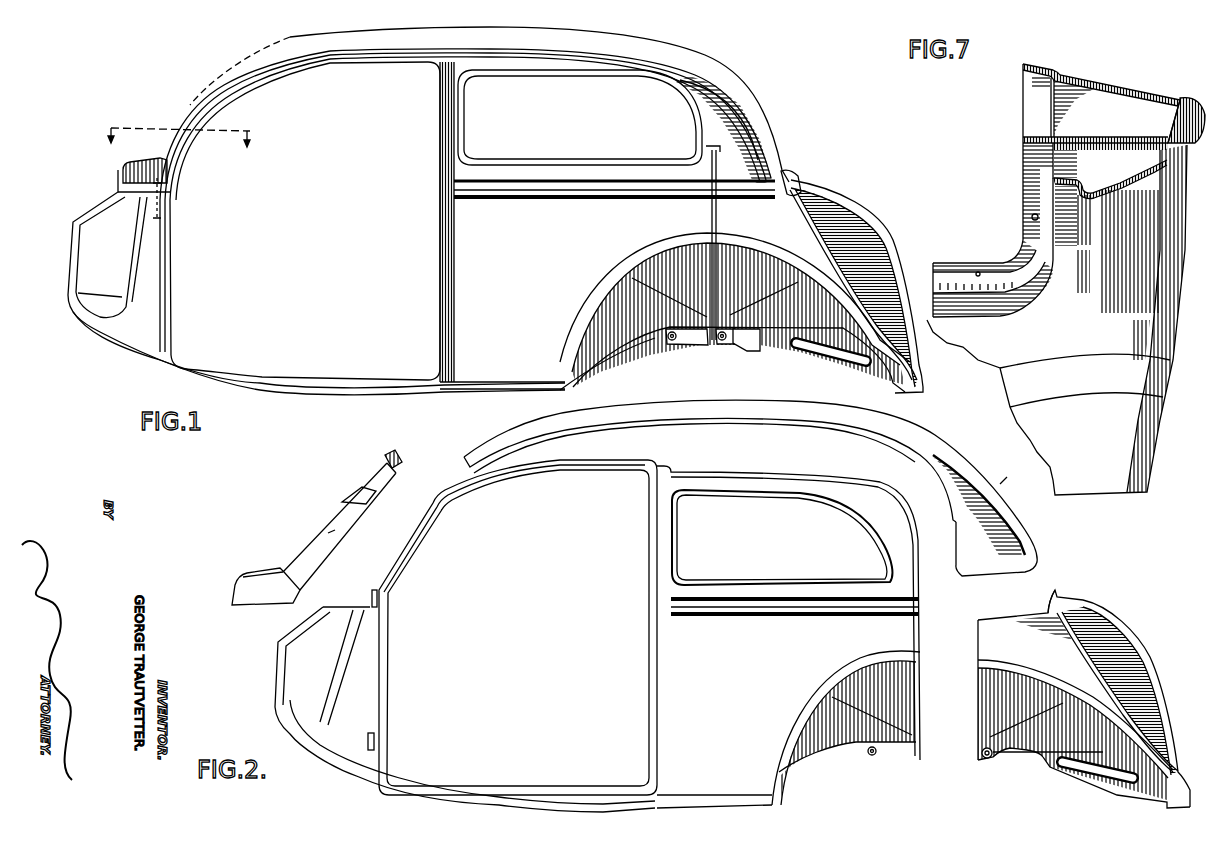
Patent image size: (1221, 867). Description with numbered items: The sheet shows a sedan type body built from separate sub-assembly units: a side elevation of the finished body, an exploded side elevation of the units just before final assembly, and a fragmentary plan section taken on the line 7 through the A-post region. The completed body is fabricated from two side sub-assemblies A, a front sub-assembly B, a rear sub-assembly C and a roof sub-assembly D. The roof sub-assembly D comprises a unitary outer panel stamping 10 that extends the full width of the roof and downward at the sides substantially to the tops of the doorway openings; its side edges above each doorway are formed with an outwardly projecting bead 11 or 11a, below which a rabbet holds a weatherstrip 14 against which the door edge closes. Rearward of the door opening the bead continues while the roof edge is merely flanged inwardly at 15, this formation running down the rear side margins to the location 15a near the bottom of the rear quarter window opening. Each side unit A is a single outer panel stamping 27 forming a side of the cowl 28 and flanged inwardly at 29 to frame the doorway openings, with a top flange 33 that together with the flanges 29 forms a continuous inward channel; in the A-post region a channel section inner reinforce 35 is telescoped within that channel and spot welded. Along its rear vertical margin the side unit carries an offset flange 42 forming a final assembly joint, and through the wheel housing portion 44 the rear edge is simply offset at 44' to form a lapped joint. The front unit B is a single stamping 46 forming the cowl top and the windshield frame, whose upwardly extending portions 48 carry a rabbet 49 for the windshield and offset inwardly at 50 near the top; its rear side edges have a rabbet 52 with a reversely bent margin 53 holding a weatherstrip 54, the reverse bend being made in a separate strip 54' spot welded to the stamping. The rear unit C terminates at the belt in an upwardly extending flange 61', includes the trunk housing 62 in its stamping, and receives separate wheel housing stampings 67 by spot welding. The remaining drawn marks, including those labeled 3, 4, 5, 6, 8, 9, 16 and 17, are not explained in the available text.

In FIG. 1, the roof side rail 3 is at (287, 38).
In FIG. 1, the roof panel 4 is at (353, 67).
In FIG. 1, the rear quarter window frame 5 is at (597, 67).
In FIG. 1, the rear pillar seam 6 is at (778, 173).
In FIG. 1, the section line 7— 7 is at (173, 145).
In FIG. 1, the cowl side panel 8 is at (112, 273).
In FIG. 1, the sill 9 is at (343, 342).
In FIG. 1, the unitary outer panel stamping 10 is at (600, 40).
In FIG. 2, the unitary outer panel stamping 10 is at (795, 406).
In FIG. 1, the outwardly projecting bead 11 is at (538, 58).
In FIG. 1, the outwardly projecting bead 11a is at (748, 286).
In FIG. 1, the weatherstrip 14 is at (352, 47).
In FIG. 1, the inward flange 15 is at (167, 183).
In FIG. 1, the location 15a is at (712, 148).
In FIG. 2, the location 15a is at (952, 525).
In FIG. 1, the wheel housing 16 is at (667, 273).
In FIG. 1, the wheel housing panel 17 is at (747, 260).
In FIG. 1, the outer panel stamping 27 is at (522, 256).
In FIG. 2, the outer panel stamping 27 is at (673, 645).
In FIG. 1, the cowl 28 is at (83, 240).
In FIG. 2, the cowl 28 is at (318, 682).
In FIG. 7, the inward flange 29 is at (1117, 88).
In FIG. 7, the top inward flange 33 is at (1120, 137).
In FIG. 7, the channel section inner reinforce 35 is at (1048, 117).
In FIG. 2, the offset flange 42 is at (920, 598).
In FIG. 1, the wheel housing portion 44 is at (701, 350).
In FIG. 2, the offset 44' is at (801, 729).
In FIG. 1, the front unit stamping 46 is at (124, 178).
In FIG. 2, the front unit stamping 46 is at (318, 533).
In FIG. 7, the upwardly extending portions 48 is at (1107, 200).
In FIG. 7, the rabbet 49 is at (1022, 167).
In FIG. 2, the inward offset 50 is at (344, 500).
In FIG. 7, the rabbet 52 is at (1192, 134).
In FIG. 7, the reversely bent margin 53 is at (1192, 103).
In FIG. 7, the weatherstrip 54 is at (1211, 104).
In FIG. 7, the separate strip 54' is at (1174, 84).
In FIG. 2, the upwardly extending flange 61' is at (1066, 593).
In FIG. 1, the trunk housing 62 is at (875, 210).
In FIG. 2, the trunk housing 62 is at (1123, 647).
In FIG. 1, the wheel housing stampings 67 is at (747, 340).
In FIG. 2, the wheel housing stampings 67 is at (1042, 767).
In FIG. 1, the side sub-assembly A is at (292, 221).
In FIG. 2, the side sub-assembly A is at (539, 627).
In FIG. 1, the front sub-assembly B is at (164, 139).
In FIG. 2, the front sub-assembly B is at (340, 532).
In FIG. 1, the rear sub-assembly C is at (857, 286).
In FIG. 2, the rear sub-assembly C is at (1084, 699).
In FIG. 1, the roof sub-assembly D is at (704, 52).
In FIG. 2, the roof sub-assembly D is at (1009, 471).